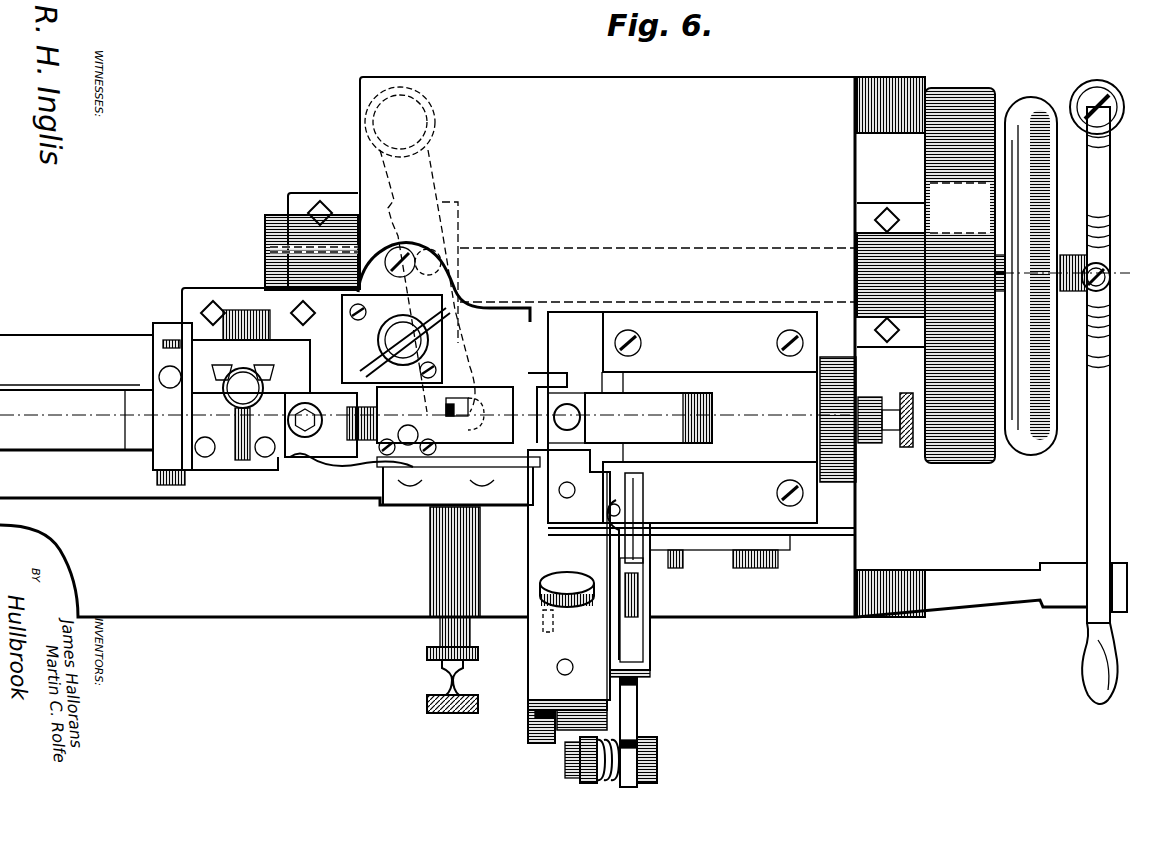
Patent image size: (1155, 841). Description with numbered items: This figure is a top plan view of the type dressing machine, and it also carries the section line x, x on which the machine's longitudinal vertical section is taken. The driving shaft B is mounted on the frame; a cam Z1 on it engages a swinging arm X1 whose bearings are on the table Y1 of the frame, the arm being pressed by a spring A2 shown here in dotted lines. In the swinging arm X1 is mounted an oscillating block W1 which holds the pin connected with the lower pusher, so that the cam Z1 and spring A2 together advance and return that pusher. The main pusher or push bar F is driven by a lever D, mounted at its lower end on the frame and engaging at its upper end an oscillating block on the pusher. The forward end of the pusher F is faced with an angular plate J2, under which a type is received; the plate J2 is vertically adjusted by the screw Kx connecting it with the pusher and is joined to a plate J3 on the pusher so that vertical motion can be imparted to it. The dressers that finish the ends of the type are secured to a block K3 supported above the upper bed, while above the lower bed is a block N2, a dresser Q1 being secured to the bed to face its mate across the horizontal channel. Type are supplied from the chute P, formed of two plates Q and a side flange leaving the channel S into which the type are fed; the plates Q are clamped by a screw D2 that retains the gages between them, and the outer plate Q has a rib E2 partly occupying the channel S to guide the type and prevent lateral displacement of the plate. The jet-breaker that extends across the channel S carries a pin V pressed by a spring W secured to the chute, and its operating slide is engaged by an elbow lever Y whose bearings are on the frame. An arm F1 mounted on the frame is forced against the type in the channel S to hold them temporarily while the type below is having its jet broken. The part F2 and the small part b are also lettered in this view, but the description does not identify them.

The spring A2 is at (430, 125).
The swinging arm X1 is at (430, 183).
The cam Z1 is at (453, 228).
The table Y1 is at (607, 162).
The driving shaft B is at (683, 263).
The section line x is at (1150, 277).
The block N2 is at (96, 404).
The dresser Q1 is at (232, 462).
The adjusting screw F2 is at (383, 460).
The plate J3 is at (553, 400).
The angular plate J2 is at (548, 412).
The screw Kx is at (587, 412).
The block K3 is at (445, 422).
The oscillating block W1 is at (480, 418).
The stud b is at (454, 415).
The pusher F is at (682, 417).
The pin V is at (630, 508).
The chute P is at (572, 543).
The spring W is at (615, 563).
The screw D2 is at (567, 589).
The elbow lever Y is at (643, 590).
The arm F1 is at (543, 625).
The plates Q is at (526, 688).
The rib E2 is at (530, 716).
The channel S is at (553, 724).
The lever D is at (630, 723).